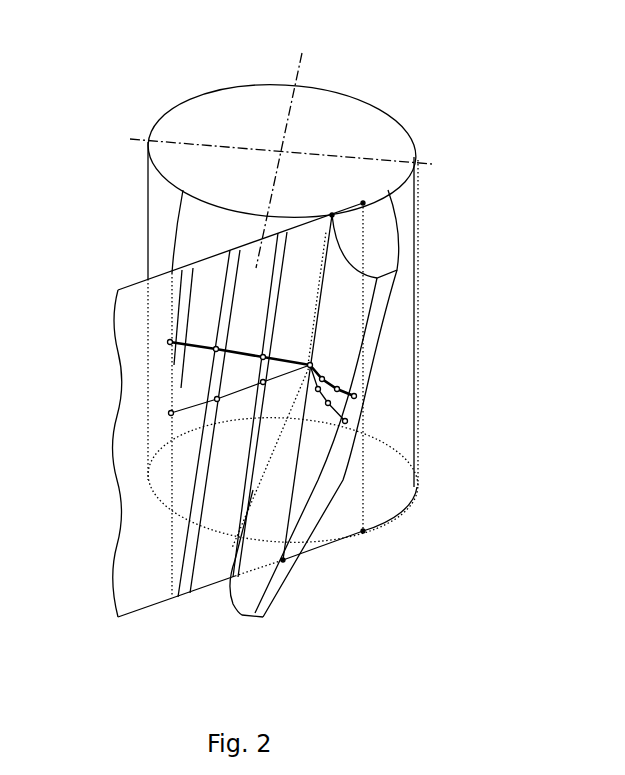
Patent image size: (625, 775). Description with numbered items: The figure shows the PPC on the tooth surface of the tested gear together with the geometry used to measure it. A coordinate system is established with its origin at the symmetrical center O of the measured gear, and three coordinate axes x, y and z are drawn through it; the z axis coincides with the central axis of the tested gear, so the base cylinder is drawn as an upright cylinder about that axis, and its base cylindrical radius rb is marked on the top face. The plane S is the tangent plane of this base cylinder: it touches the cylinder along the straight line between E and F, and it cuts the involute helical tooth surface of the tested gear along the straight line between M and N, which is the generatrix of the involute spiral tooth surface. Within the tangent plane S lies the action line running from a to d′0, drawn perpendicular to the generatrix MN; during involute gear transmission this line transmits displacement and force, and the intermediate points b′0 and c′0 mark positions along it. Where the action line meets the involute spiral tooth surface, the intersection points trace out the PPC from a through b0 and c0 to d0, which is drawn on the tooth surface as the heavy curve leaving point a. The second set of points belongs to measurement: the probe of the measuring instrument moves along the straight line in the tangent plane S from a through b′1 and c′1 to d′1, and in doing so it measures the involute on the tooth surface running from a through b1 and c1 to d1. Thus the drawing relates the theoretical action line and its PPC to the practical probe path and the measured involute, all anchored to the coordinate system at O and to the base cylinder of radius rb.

The tangent plane S is at (238, 410).
The generatrix endpoint M is at (322, 208).
The tangent line endpoint E is at (356, 196).
The tangent line endpoint F is at (370, 540).
The generatrix endpoint N is at (273, 566).
The symmetrical center of the measured gear O is at (263, 500).
The x-axis x is at (440, 493).
The y-axis y is at (300, 385).
The z-axis z is at (282, 600).
The base cylindrical radius rb is at (282, 152).
The point a is at (314, 360).
The point b0 is at (329, 375).
The point c0 is at (343, 384).
The point d0 is at (362, 394).
The point b1 is at (314, 395).
The point c1 is at (323, 409).
The point d1 is at (338, 428).
The point b′0 is at (258, 350).
The point c′0 is at (211, 342).
The point d′0 is at (165, 336).
The point b′1 is at (272, 390).
The point c′1 is at (225, 406).
The point d′1 is at (182, 421).